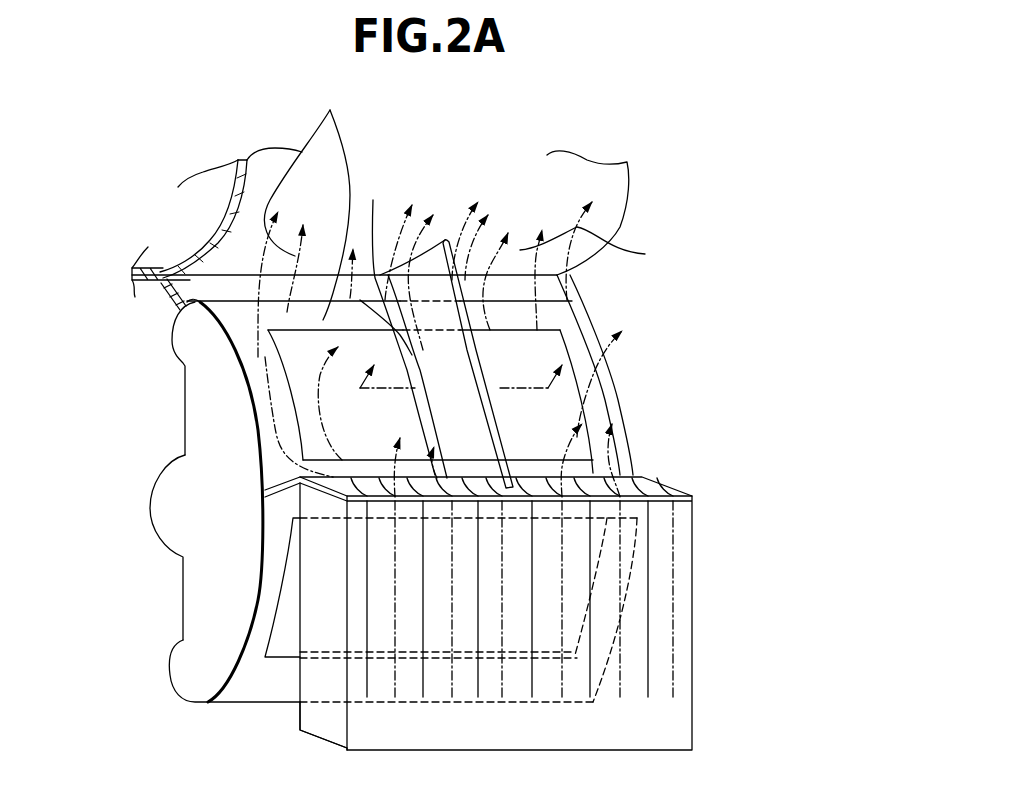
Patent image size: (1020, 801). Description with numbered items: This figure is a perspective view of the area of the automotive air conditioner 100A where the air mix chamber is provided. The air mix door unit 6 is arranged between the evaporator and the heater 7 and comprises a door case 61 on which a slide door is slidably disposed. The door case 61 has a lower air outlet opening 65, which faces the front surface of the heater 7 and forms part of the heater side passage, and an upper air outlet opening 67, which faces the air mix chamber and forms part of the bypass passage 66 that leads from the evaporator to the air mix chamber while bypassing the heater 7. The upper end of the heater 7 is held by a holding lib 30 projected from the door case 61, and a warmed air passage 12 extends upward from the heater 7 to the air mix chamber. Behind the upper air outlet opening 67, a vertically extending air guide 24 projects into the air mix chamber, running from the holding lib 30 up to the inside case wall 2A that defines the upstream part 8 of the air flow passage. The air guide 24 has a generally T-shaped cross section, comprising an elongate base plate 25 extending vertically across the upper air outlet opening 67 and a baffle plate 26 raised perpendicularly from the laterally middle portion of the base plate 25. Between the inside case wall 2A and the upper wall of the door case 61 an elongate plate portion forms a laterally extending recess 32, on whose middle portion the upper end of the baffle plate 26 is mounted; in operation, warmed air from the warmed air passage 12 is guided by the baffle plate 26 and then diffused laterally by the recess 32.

The automotive air conditioner 100A is at (636, 100).
The inside case wall 2A is at (628, 183).
The air mix door unit 6 is at (328, 297).
The heater 7 is at (317, 713).
The upstream part 8 is at (207, 240).
The warmed air passage 12 is at (545, 600).
The air guide 24 is at (448, 127).
The base plate 25 is at (373, 200).
The baffle plate 26 is at (444, 240).
The holding lib 30 is at (265, 486).
The recess 32 is at (170, 283).
The door case 61 is at (172, 340).
The lower air outlet opening 65 is at (280, 606).
The bypass passage 66 is at (354, 488).
The upper air outlet opening 67 is at (285, 378).